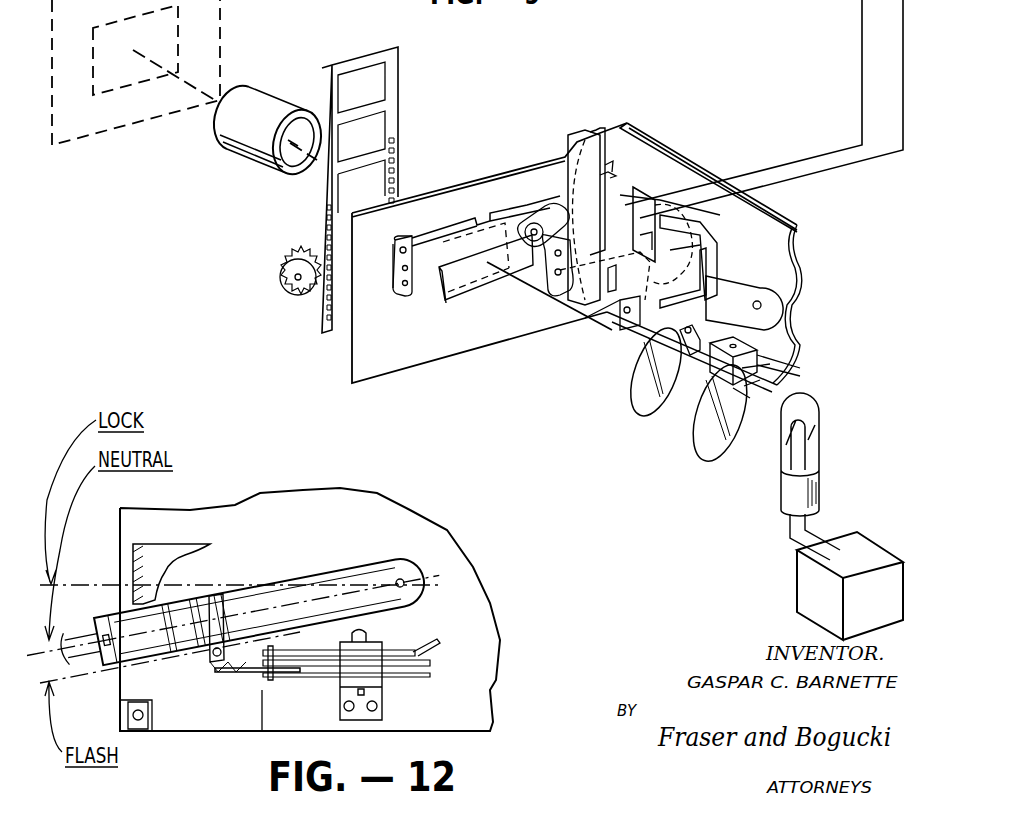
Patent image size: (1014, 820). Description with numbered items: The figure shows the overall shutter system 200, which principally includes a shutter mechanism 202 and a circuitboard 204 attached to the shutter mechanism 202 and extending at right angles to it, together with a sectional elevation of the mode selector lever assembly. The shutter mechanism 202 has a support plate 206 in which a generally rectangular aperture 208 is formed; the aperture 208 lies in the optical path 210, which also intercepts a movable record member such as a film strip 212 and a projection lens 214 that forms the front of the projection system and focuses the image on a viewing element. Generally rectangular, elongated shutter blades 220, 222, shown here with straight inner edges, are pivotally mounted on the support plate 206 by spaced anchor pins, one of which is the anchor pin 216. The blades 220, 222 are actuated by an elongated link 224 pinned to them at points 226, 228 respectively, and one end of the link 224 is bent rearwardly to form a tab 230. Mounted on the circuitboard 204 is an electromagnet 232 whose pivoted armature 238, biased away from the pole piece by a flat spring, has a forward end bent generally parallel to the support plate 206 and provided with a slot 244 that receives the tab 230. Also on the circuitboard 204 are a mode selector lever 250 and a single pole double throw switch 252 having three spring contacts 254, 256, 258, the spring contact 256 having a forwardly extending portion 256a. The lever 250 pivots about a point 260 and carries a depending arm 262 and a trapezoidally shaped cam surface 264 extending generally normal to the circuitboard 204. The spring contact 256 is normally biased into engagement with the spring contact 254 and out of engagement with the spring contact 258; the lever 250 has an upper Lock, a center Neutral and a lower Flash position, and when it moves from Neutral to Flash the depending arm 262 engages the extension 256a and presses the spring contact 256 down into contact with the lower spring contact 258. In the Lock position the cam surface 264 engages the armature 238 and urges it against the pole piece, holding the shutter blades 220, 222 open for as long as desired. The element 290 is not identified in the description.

In FIG. 9, the shutter system 200 is at (607, 70).
In FIG. 9, the shutter mechanism 202 is at (513, 99).
In FIG. 9, the circuitboard 204 is at (665, 131).
In FIG. 9, the support plate 206 is at (537, 328).
In FIG. 9, the aperture 208 is at (496, 288).
In FIG. 9, the optical path 210 is at (603, 310).
In FIG. 9, the film strip 212 is at (399, 52).
In FIG. 9, the projection lens 214 is at (258, 82).
In FIG. 9, the anchor pin 216 is at (392, 264).
In FIG. 9, the shutter blade 220 is at (430, 270).
In FIG. 9, the shutter blade 222 is at (545, 275).
In FIG. 9, the link 224 is at (560, 228).
In FIG. 9, the pinning point 226 is at (400, 240).
In FIG. 9, the pinning point 228 is at (542, 196).
In FIG. 9, the tab 230 is at (598, 215).
In FIG. 9, the electromagnet 232 is at (696, 222).
In FIG. 9, the armature 238 is at (648, 193).
In FIG. 12, the armature 238 is at (150, 545).
In FIG. 9, the slot 244 is at (582, 210).
In FIG. 9, the mode selector lever 250 is at (760, 272).
In FIG. 12, the mode selector lever 250 is at (272, 564).
In FIG. 9, the single pole double throw switch 252 is at (695, 382).
In FIG. 12, the single pole double throw switch 252 is at (435, 657).
In FIG. 12, the spring contact 254 is at (362, 633).
In FIG. 12, the spring contact 256 is at (318, 680).
In FIG. 9, the forwardly extending portion 256a is at (648, 395).
In FIG. 12, the forwardly extending portion 256a is at (222, 676).
In FIG. 12, the spring contact 258 is at (278, 678).
In FIG. 9, the pivot point 260 is at (773, 308).
In FIG. 12, the pivot point 260 is at (398, 578).
In FIG. 9, the depending arm 262 is at (660, 330).
In FIG. 12, the depending arm 262 is at (212, 662).
In FIG. 9, the cam surface 264 is at (686, 260).
In FIG. 12, the cam surface 264 is at (218, 595).
In FIG. 9, the stop bar 290 is at (528, 228).